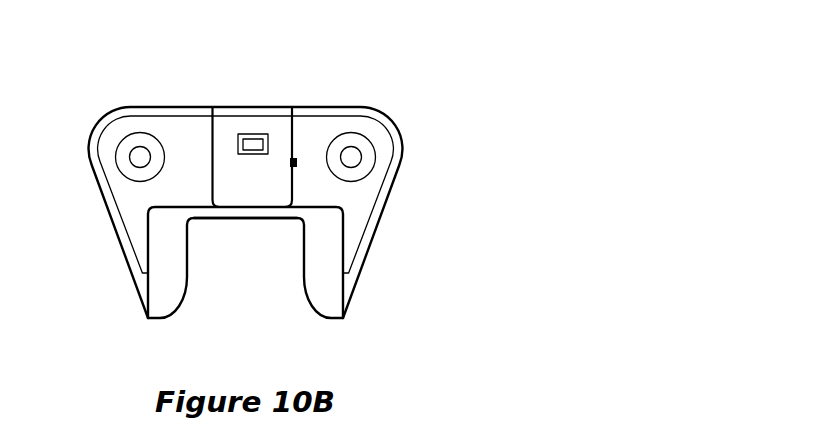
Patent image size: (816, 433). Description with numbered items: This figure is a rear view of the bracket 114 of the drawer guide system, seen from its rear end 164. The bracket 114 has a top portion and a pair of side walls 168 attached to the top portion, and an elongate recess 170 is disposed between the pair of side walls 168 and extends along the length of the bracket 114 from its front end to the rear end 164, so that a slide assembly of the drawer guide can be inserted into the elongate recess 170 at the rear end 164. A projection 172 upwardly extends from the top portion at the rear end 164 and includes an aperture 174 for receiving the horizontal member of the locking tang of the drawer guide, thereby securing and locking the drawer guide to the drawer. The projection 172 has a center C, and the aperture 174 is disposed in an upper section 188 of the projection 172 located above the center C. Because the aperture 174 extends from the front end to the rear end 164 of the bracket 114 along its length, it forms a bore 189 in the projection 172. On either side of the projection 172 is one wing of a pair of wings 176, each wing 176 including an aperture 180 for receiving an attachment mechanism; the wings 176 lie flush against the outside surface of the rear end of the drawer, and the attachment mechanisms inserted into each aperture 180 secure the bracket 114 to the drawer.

The bracket 114 is at (443, 75).
The rear end 164 is at (355, 292).
The pair of side walls 168 is at (162, 290).
The elongate recess 170 is at (265, 283).
The projection 172 is at (280, 135).
The aperture 174 is at (266, 139).
The pair of wings 176 is at (125, 198).
The aperture 180 is at (140, 132).
The upper section 188 is at (242, 131).
The bore 189 is at (247, 145).
The center C is at (302, 163).